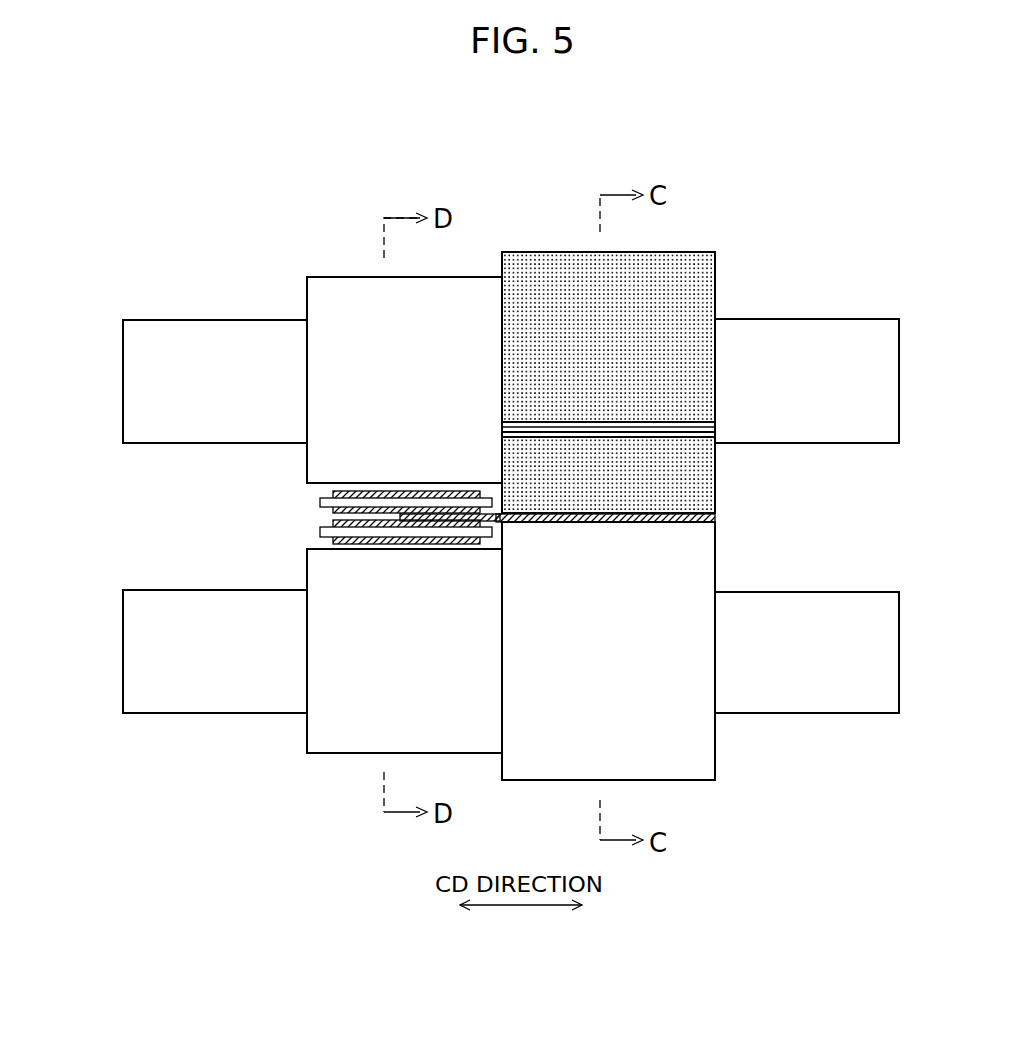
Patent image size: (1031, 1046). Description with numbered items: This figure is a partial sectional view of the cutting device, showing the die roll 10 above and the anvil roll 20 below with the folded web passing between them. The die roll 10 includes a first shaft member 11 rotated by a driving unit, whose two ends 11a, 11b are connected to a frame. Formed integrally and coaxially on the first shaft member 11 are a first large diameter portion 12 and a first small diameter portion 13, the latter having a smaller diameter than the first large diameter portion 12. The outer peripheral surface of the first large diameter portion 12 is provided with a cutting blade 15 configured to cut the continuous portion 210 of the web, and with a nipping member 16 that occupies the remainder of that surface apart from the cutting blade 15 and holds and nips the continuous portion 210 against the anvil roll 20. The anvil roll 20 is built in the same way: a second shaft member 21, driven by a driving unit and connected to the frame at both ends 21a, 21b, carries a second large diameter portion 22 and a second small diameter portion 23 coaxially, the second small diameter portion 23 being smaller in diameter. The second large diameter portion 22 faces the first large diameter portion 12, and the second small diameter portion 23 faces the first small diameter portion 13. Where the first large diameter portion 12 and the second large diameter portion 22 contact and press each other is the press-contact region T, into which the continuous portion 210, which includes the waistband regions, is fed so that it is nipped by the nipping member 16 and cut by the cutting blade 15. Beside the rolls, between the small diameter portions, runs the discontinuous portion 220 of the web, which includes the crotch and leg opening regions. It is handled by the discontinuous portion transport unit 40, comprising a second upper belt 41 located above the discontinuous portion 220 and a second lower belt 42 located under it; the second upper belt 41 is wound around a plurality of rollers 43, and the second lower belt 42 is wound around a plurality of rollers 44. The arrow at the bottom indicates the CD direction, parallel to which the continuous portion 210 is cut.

The die roll 10 is at (513, 341).
The first shaft member 11 is at (513, 343).
The end of first shaft member 11a is at (899, 382).
The end of first shaft member 11b is at (123, 380).
The first large diameter portion 12 is at (622, 341).
The first small diameter portion 13 is at (335, 290).
The cutting blade 15 is at (702, 434).
The nipping member 16 is at (548, 268).
The anvil roll 20 is at (513, 660).
The second shaft member 21 is at (513, 611).
The end of second shaft member 21a is at (899, 652).
The end of second shaft member 21b is at (123, 650).
The second large diameter portion 22 is at (555, 767).
The second small diameter portion 23 is at (335, 755).
The discontinuous portion transport unit 40 is at (341, 517).
The second upper belt 41 is at (400, 492).
The second lower belt 42 is at (400, 545).
The rollers 43 is at (320, 502).
The rollers 44 is at (320, 532).
The continuous portion 210 is at (598, 522).
The discontinuous portion 220 is at (467, 520).
The press-contact region T is at (716, 517).